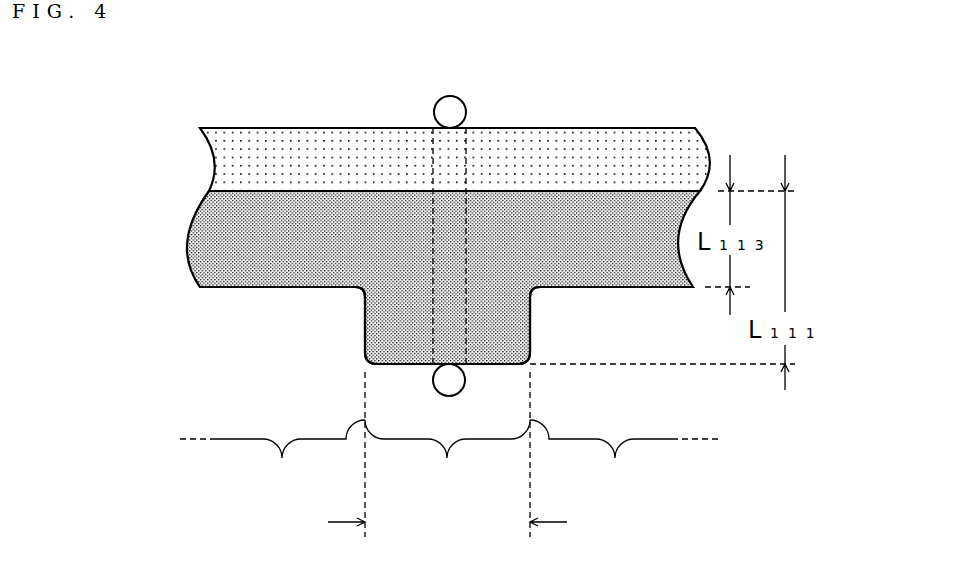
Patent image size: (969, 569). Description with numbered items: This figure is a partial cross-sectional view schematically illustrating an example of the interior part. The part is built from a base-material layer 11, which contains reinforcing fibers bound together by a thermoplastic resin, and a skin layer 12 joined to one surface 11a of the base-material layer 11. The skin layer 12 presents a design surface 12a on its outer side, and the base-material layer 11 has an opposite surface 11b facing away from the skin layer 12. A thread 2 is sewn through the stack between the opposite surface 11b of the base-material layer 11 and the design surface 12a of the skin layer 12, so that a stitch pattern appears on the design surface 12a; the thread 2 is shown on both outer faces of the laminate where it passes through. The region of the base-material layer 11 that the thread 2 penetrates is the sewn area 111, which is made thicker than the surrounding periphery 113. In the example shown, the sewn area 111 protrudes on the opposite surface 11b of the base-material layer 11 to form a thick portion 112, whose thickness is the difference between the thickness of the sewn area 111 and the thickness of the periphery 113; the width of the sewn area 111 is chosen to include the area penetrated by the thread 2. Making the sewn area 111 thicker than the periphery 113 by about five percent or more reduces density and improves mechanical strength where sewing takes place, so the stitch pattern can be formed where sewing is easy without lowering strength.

The thread 2 is at (450, 97).
The base-material layer 11 is at (322, 278).
The one surface 11a is at (258, 191).
The opposite surface 11b is at (238, 287).
The skin layer 12 is at (498, 138).
The design surface 12a is at (560, 128).
The sewn area 111 is at (447, 333).
The thick portion 112 is at (570, 289).
The periphery 113 is at (450, 456).